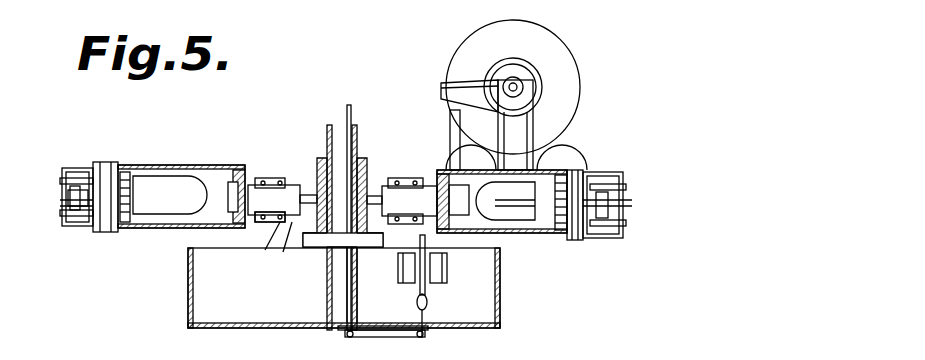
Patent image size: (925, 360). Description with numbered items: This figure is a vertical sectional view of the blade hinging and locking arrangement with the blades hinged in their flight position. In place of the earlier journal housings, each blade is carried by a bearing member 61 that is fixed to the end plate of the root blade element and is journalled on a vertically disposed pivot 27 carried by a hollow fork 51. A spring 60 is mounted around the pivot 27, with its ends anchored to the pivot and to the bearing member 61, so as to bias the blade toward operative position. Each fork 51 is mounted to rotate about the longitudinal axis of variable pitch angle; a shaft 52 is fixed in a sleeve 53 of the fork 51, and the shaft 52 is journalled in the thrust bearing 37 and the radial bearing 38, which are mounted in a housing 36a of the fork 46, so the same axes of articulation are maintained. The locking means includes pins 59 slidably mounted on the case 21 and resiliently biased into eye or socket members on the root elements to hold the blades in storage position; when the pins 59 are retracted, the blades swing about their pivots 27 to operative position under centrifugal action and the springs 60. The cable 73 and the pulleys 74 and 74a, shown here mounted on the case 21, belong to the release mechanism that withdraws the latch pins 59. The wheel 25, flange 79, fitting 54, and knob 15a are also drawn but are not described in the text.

The wheel 25 is at (574, 58).
The cable 73 is at (352, 112).
The bracket flange 79 is at (330, 265).
The pivot 27 is at (108, 190).
The hollow fork 51 is at (183, 168).
The spring 60 is at (131, 192).
The sleeve 53 is at (236, 172).
The fitting 54 is at (85, 170).
The bearing member 61 is at (82, 226).
The shaft 52 is at (272, 186).
The fork 46 is at (308, 196).
The radial bearing 38 is at (262, 222).
The housing 36a is at (265, 244).
The thrust bearing 37 is at (292, 246).
The case 21 is at (188, 292).
The pin 59 is at (398, 262).
The knob 15a is at (428, 300).
The pulley 74 is at (362, 330).
The pulley 74a is at (410, 326).